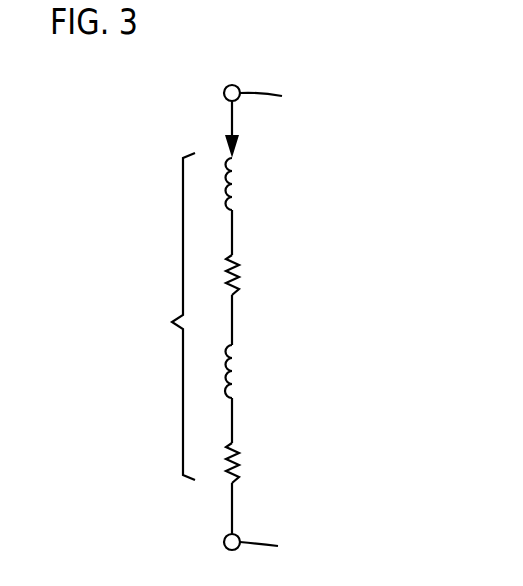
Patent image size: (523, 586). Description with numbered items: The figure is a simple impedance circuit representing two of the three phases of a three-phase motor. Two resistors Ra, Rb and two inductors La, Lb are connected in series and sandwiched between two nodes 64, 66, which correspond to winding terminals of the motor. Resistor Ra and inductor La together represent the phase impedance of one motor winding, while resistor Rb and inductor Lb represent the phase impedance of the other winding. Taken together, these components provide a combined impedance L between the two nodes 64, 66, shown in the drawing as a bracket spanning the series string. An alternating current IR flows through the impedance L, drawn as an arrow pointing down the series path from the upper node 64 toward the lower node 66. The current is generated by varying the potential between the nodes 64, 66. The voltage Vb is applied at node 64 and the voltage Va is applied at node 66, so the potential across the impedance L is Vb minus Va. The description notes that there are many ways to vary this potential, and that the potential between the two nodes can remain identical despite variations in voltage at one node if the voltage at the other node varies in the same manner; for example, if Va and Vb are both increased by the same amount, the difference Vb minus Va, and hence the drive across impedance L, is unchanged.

The node 64 is at (225, 87).
The node 66 is at (224, 540).
The inductor La is at (245, 184).
The resistor Ra is at (248, 275).
The inductor Lb is at (246, 371).
The resistor Rb is at (248, 463).
The combined impedance L is at (175, 316).
The alternating current IR is at (243, 127).
The voltage at node 64 Vb is at (274, 100).
The voltage at node 66 Va is at (272, 548).